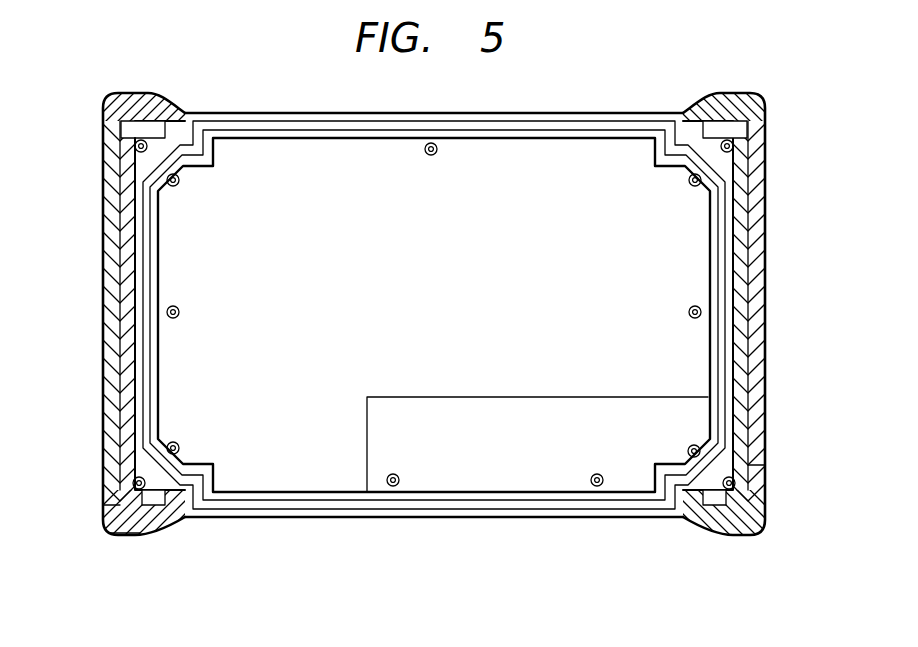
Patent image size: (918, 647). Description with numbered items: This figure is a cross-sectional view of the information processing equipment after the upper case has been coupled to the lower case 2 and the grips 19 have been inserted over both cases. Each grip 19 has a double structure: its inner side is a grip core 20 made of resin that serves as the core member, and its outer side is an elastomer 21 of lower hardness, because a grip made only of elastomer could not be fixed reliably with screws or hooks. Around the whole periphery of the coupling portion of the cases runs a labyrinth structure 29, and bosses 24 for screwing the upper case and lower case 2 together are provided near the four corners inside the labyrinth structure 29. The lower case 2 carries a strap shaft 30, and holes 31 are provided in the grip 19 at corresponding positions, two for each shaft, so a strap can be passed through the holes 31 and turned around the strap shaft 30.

The lower case 2 is at (486, 370).
The grip 19 is at (766, 234).
The grip core 20 is at (127, 447).
The elastomer 21 is at (130, 530).
The boss 24 is at (181, 448).
The labyrinth structure 29 is at (353, 503).
The strap shaft 30 is at (120, 485).
The hole 31 is at (767, 471).